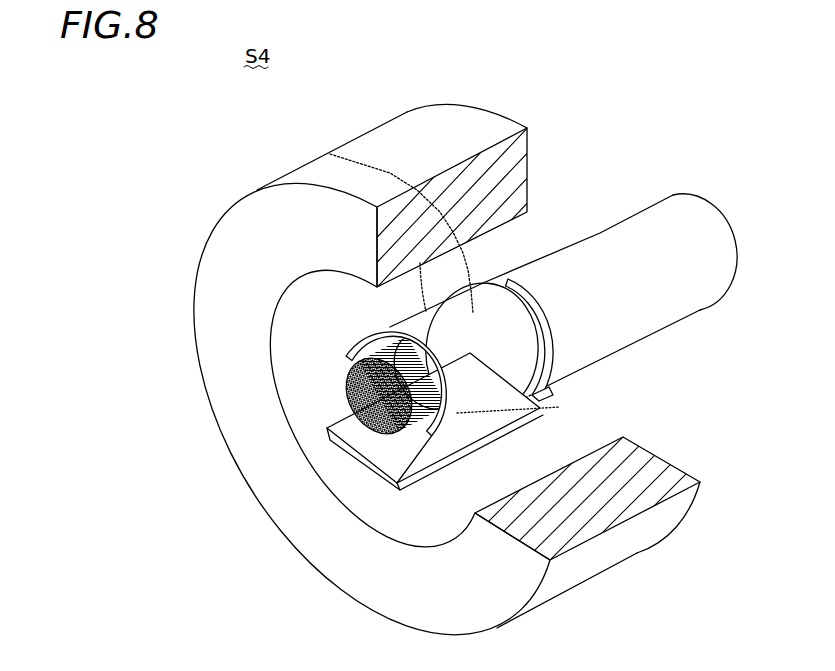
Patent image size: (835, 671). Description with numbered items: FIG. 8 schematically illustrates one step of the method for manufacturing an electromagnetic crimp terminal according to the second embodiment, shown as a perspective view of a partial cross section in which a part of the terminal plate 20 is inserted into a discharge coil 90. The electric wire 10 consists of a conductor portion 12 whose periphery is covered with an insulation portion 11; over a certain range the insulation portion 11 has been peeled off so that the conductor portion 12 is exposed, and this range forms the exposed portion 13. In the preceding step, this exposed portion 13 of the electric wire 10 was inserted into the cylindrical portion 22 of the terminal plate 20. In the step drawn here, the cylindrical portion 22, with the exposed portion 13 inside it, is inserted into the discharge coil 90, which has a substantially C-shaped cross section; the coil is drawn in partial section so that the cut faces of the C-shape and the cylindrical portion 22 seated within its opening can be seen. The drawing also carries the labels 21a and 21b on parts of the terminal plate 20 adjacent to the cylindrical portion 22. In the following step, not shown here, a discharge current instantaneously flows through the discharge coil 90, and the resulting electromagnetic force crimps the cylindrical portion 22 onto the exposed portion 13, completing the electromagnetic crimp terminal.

The discharge coil 90 is at (620, 548).
The electric wire 10 is at (551, 342).
The insulation portion 11 is at (600, 313).
The conductor portion 12 is at (415, 473).
The exposed portion 13 is at (553, 395).
The terminal plate 20 is at (288, 312).
The sensor element 21a is at (387, 332).
The holder bracket 21b is at (375, 230).
The cylindrical portion 22 is at (330, 154).